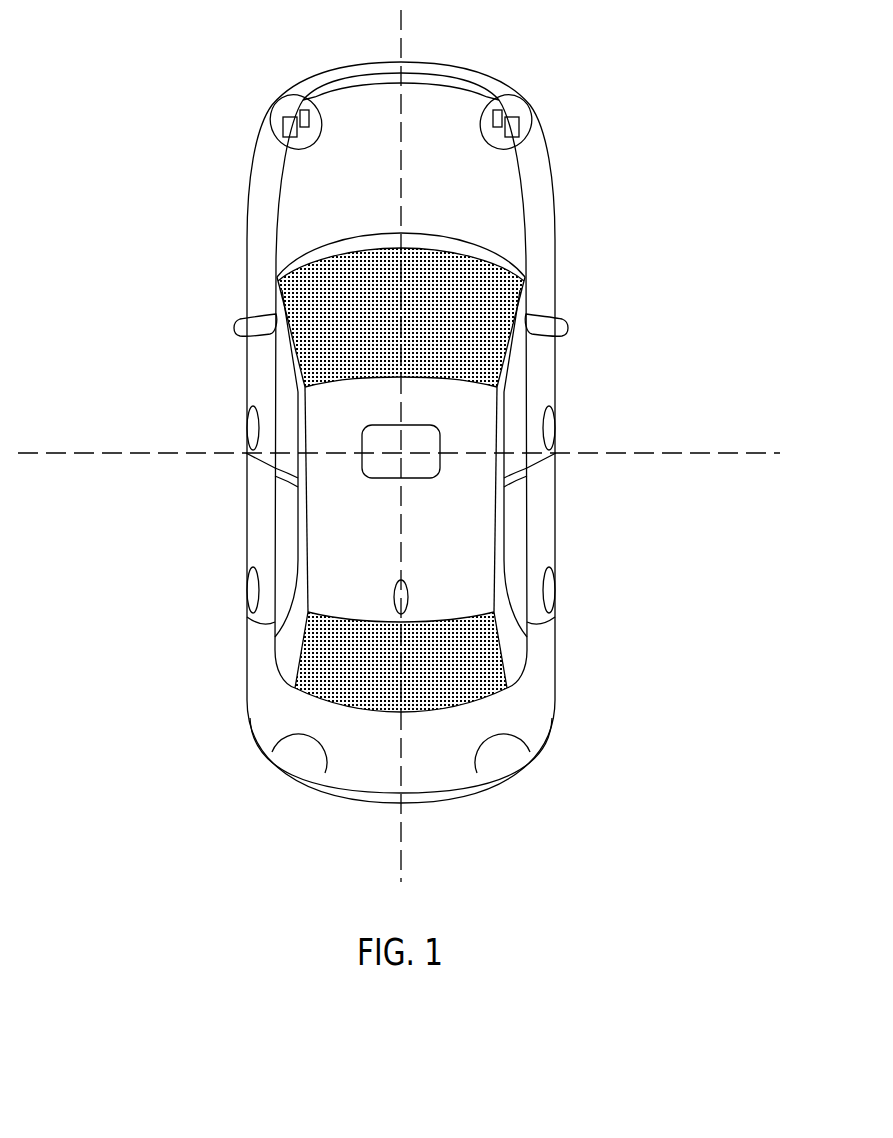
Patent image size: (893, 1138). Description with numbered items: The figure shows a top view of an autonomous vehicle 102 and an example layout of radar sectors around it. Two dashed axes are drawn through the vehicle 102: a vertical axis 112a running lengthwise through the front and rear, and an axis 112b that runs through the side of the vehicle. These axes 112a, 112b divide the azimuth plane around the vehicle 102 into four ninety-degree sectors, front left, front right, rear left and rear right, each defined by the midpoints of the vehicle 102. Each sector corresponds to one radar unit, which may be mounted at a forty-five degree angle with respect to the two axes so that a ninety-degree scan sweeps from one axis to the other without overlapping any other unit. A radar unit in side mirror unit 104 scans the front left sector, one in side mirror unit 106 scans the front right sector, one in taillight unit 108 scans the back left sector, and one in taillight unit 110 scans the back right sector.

The autonomous vehicle 102 is at (350, 67).
The side mirror unit 104 is at (245, 318).
The side mirror unit 106 is at (557, 318).
The taillight unit 108 is at (296, 752).
The taillight unit 110 is at (518, 748).
The vertical axis 112a is at (401, 852).
The axis 112b is at (145, 453).